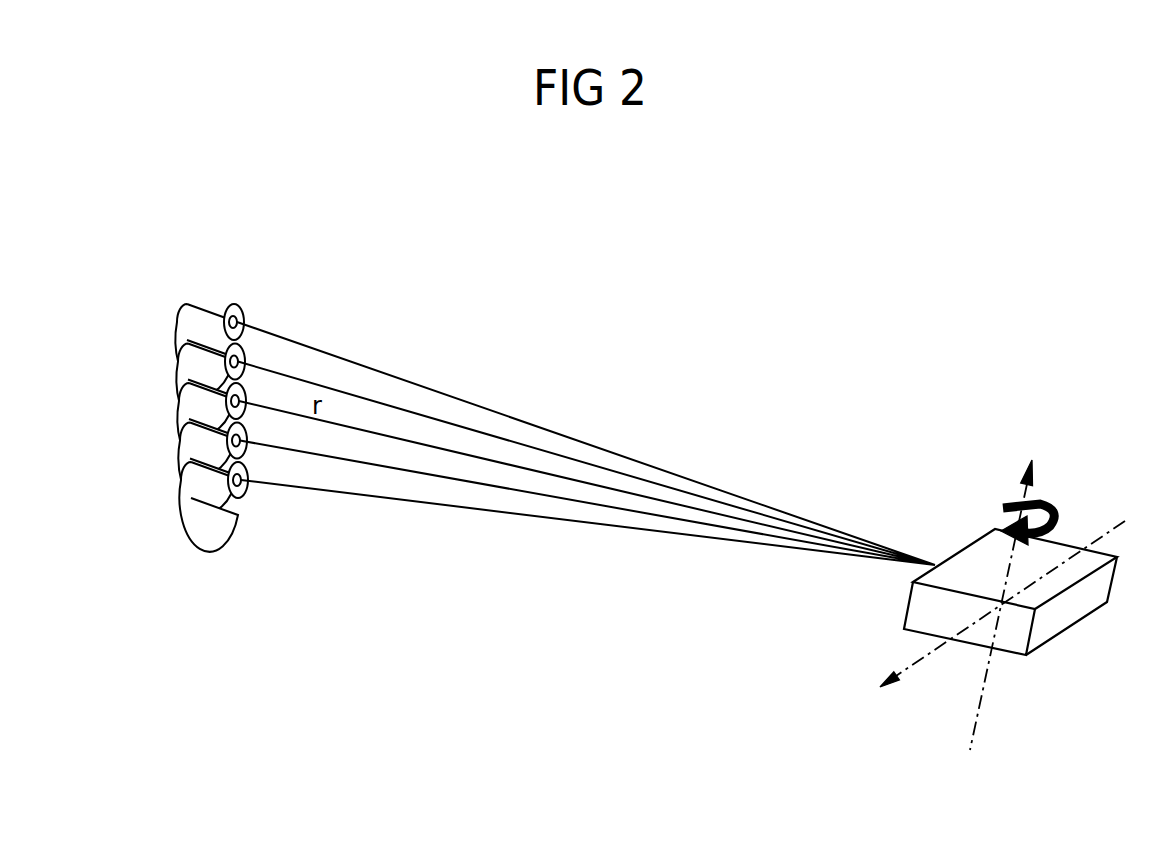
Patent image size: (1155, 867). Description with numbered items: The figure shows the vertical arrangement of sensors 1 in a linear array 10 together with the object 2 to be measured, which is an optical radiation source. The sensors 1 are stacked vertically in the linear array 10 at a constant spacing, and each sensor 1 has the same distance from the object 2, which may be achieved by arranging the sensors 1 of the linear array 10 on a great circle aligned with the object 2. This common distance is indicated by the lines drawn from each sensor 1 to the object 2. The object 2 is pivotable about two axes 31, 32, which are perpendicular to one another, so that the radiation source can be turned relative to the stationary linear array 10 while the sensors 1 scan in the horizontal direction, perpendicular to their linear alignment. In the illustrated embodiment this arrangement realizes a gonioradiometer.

The sensor 1 is at (190, 433).
The linear array 10 is at (206, 371).
The object to be measured 2 is at (1053, 638).
The axis 31 is at (980, 698).
The axis 32 is at (923, 654).